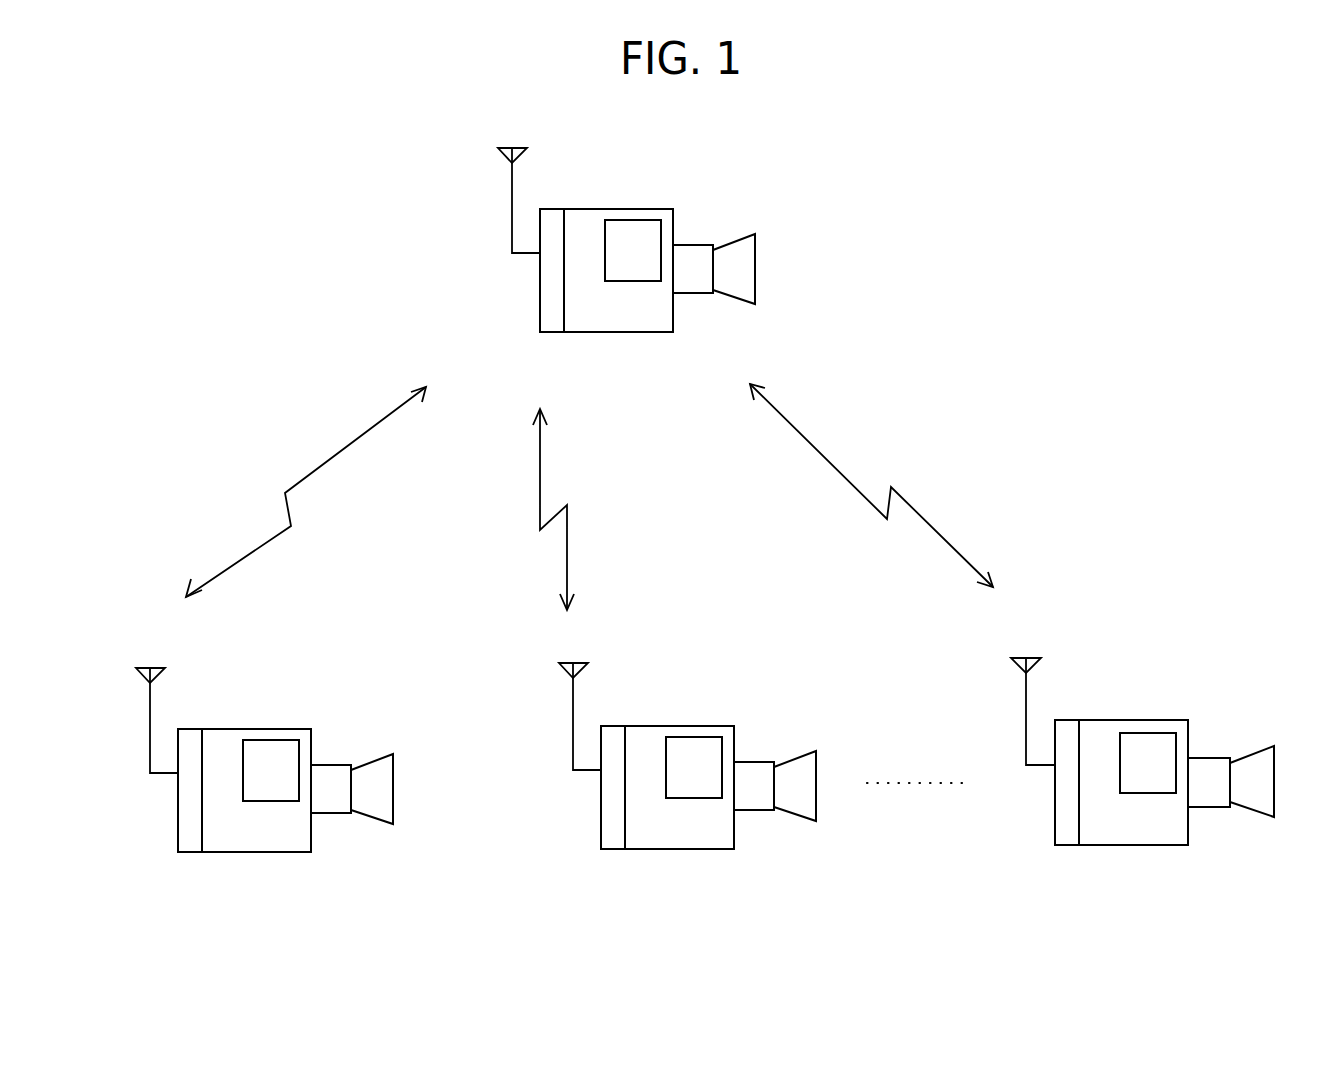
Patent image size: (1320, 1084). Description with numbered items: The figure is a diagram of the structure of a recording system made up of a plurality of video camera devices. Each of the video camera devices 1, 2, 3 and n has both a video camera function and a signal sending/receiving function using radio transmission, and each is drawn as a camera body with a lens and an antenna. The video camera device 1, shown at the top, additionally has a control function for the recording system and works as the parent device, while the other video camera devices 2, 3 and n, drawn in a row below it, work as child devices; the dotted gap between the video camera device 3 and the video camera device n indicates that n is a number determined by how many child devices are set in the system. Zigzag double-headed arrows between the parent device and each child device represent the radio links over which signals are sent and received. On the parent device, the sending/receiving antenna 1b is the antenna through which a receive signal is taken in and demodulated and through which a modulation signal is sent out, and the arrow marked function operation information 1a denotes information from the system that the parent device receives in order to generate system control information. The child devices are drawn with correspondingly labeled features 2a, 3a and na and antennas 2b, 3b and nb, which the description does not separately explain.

The video camera device 1 is at (649, 276).
The function operation information 1a is at (647, 315).
The sending/receiving antenna 1b is at (509, 242).
The video camera device 2 is at (280, 796).
The camera unit of child device 2 2a is at (285, 835).
The antenna of child device 2 2b is at (147, 762).
The video camera device 3 is at (678, 793).
The camera unit of child device 3 3a is at (708, 833).
The antenna of child device 3 3b is at (570, 758).
The video camera device n is at (1133, 787).
The camera unit of child device n na is at (1164, 827).
The antenna of child device n nb is at (1024, 754).